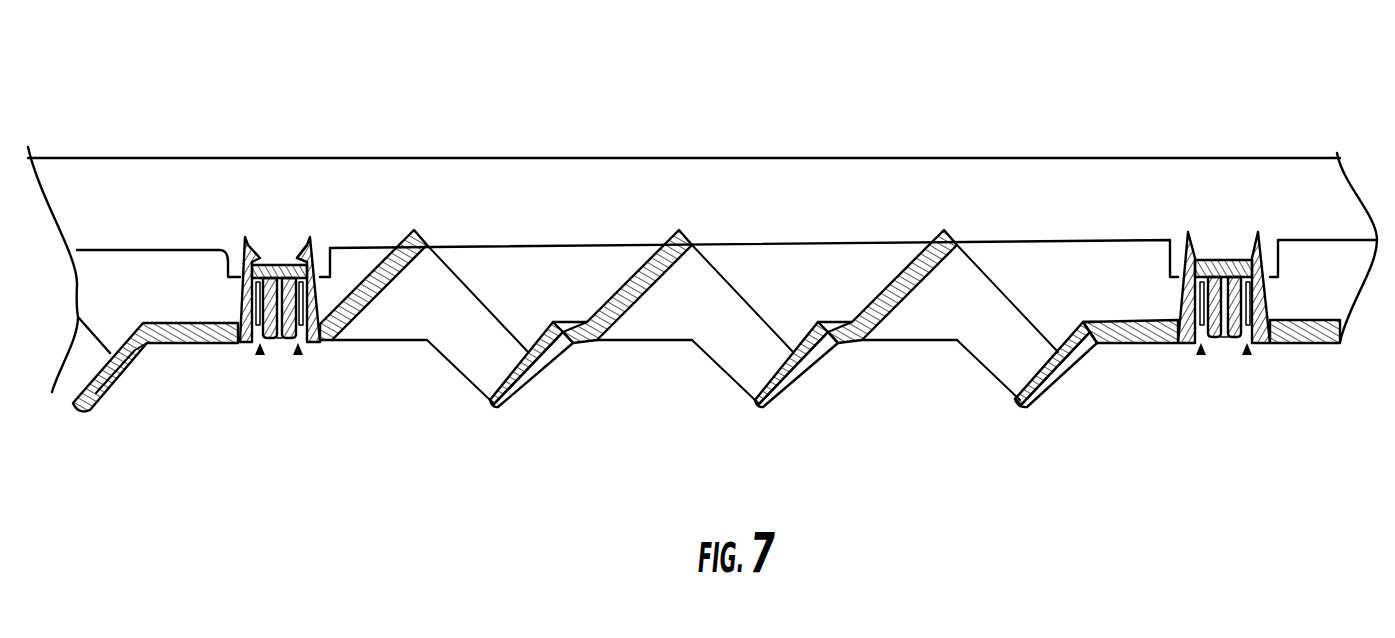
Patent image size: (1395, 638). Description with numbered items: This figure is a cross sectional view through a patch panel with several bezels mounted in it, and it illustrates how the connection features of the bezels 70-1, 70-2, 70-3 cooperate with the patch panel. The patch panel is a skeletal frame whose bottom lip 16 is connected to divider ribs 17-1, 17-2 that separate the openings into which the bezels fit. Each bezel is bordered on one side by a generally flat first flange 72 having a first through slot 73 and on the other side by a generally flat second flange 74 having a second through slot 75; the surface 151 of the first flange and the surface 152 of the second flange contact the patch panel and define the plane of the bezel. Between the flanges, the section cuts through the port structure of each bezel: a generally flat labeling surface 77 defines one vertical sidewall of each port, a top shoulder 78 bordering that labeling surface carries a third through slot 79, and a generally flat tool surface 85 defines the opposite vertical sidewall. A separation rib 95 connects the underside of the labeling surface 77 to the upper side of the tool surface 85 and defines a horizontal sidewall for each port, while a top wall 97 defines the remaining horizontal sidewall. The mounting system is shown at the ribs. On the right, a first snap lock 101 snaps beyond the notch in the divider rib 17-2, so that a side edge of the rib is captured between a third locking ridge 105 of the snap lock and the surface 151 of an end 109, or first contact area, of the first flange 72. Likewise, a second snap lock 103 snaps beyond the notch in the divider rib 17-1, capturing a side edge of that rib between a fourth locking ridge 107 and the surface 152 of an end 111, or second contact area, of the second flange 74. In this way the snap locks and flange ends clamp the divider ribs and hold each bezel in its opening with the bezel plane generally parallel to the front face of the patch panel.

The bottom lip 16 is at (793, 215).
The bezel 70-1 is at (158, 277).
The bezel 70-2 is at (848, 265).
The bezel 70-3 is at (1323, 257).
The divider rib 17-1 is at (276, 262).
The divider rib 17-2 is at (1216, 260).
The first flange 72 is at (193, 345).
The first through slot 73 is at (260, 355).
The second flange 74 is at (325, 345).
The second through slot 75 is at (298, 355).
The labeling surface 77 is at (513, 350).
The top shoulder 78 is at (507, 398).
The third through slot 79 is at (522, 374).
The tool surface 85 is at (400, 283).
The separation rib 95 is at (438, 335).
The top wall 97 is at (805, 295).
The first snap lock 101 is at (1178, 241).
The second snap lock 103 is at (318, 229).
The third locking ridge 105 is at (1207, 260).
The fourth locking ridge 107 is at (295, 263).
The end of the first flange 109 is at (1222, 345).
The end of the second flange 111 is at (279, 345).
The surface 151 is at (1228, 265).
The surface 152 is at (360, 248).